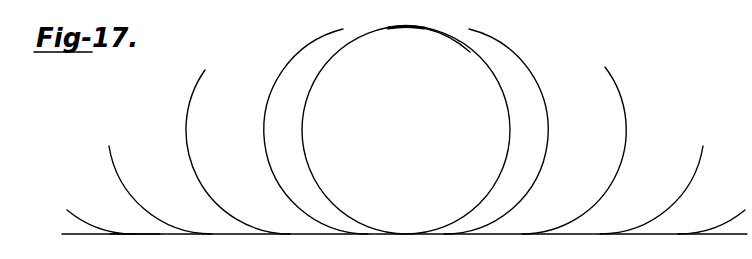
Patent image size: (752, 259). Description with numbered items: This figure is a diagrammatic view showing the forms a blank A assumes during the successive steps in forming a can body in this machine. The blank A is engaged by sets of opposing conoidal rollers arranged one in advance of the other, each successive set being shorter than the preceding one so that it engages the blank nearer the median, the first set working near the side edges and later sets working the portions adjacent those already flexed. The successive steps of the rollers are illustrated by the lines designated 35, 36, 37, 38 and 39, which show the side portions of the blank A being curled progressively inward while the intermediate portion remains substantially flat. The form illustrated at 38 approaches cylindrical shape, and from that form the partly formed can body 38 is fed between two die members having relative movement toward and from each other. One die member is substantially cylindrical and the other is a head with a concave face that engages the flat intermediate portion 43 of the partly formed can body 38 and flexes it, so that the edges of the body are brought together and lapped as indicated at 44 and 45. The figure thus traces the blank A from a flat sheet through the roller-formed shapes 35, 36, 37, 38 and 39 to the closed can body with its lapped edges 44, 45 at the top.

The line illustrating first roller step 35 is at (73, 213).
The line illustrating second roller step 36 is at (111, 152).
The line illustrating third roller step 37 is at (190, 100).
The partly formed can body 38 is at (281, 72).
The line illustrating final roller step 39 is at (303, 105).
The flat intermediate portion 43 is at (375, 235).
The lapped edge 44 is at (418, 27).
The lapped edge 45 is at (395, 24).
The blank A is at (83, 235).